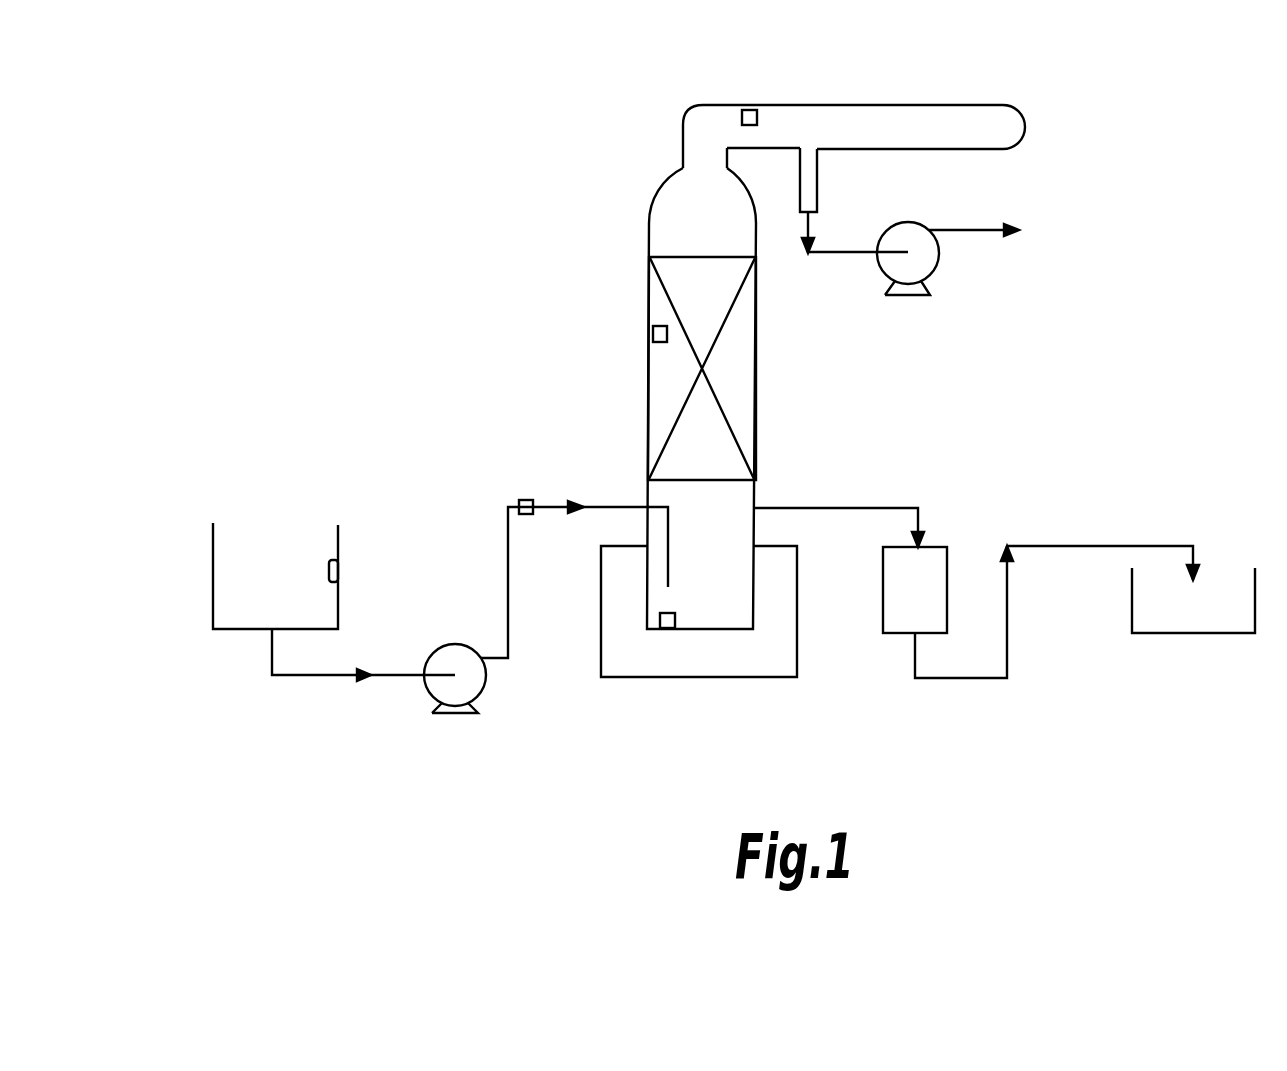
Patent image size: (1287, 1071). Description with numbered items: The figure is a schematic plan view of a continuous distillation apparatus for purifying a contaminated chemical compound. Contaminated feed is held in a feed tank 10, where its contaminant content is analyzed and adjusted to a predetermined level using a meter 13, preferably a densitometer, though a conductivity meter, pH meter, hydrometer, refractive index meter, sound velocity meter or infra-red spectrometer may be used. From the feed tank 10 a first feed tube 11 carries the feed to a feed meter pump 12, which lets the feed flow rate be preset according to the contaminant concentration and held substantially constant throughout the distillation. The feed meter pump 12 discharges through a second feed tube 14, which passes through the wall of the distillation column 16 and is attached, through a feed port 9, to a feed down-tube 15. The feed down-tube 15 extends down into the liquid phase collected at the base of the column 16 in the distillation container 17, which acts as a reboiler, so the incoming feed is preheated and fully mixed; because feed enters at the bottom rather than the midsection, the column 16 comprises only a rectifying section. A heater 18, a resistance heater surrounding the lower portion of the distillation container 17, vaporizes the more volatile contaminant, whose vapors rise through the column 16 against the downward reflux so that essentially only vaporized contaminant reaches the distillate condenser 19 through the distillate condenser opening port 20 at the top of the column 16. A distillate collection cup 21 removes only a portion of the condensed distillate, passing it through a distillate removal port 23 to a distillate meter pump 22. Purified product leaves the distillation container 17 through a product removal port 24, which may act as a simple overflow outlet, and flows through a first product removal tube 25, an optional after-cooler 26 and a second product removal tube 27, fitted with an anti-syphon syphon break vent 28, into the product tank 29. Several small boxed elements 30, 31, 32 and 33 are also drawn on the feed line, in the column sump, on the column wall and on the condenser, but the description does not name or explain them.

The feed port 9 is at (648, 505).
The feed tank 10 is at (240, 632).
The first feed tube 11 is at (335, 680).
The feed meter pump 12 is at (455, 695).
The meter 13 is at (338, 572).
The second feed tube 14 is at (507, 612).
The feed down-tube 15 is at (677, 580).
The distillation column 16 is at (648, 303).
The distillation container 17 is at (707, 525).
The heater 18 is at (717, 645).
The distillate condenser 19 is at (845, 107).
The distillate condenser opening port 20 is at (683, 172).
The distillate collection cup 21 is at (818, 170).
The distillate meter pump 22 is at (927, 267).
The distillate removal port 23 is at (825, 257).
The product removal port 24 is at (757, 506).
The first product removal tube 25 is at (862, 500).
The after-cooler 26 is at (947, 568).
The second product removal tube 27 is at (965, 678).
The syphon break vent 28 is at (1013, 542).
The product tank 29 is at (1132, 608).
The flow meter 30 is at (530, 500).
The temperature sensor 31 is at (666, 628).
The temperature sensor 32 is at (653, 335).
The pressure sensor 33 is at (749, 110).